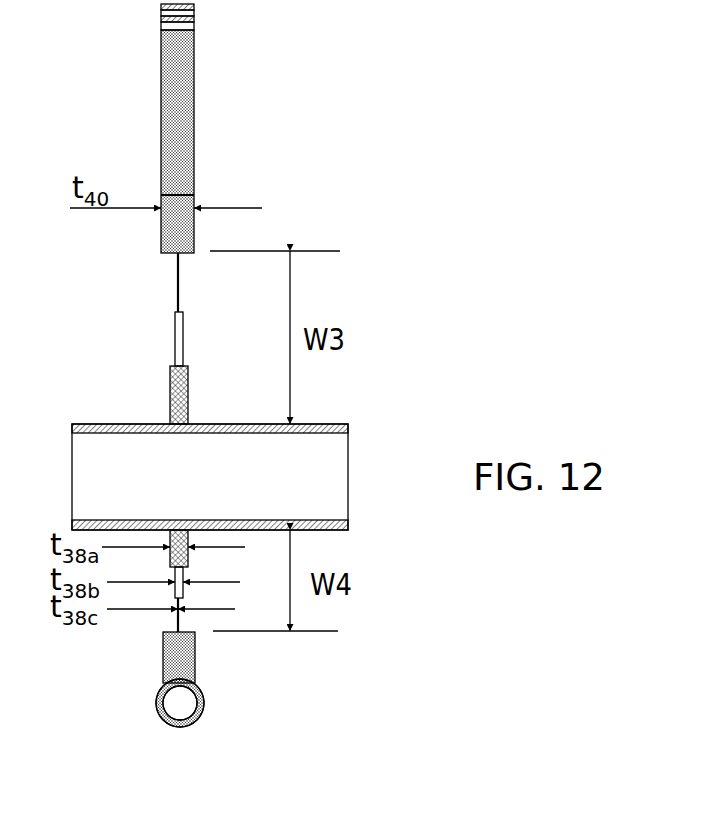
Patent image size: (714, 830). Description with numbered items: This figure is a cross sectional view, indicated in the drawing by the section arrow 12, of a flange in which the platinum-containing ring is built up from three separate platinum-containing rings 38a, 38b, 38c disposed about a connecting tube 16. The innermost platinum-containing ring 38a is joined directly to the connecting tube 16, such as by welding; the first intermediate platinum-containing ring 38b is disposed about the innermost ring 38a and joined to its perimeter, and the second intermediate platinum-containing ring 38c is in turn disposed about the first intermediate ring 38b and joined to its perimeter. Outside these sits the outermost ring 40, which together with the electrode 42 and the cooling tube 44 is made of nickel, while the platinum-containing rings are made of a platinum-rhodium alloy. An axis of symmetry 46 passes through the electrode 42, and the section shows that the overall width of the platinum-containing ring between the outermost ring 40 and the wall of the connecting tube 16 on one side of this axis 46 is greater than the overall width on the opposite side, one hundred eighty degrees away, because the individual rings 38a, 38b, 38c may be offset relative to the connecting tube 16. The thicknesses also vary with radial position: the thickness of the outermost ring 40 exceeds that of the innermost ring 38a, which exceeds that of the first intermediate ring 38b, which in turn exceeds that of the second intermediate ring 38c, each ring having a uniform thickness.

The direction arrow / section view reference 12 is at (533, 14).
The connecting tube 16 is at (335, 424).
The innermost platinum-containing ring 38a is at (170, 404).
The first intermediate platinum-containing ring 38b is at (175, 360).
The second intermediate platinum-containing ring 38c is at (178, 300).
The outermost ring 40 is at (195, 654).
The electrode 42 is at (195, 89).
The cooling tube 44 is at (157, 718).
The axis of symmetry 46 is at (562, 0).